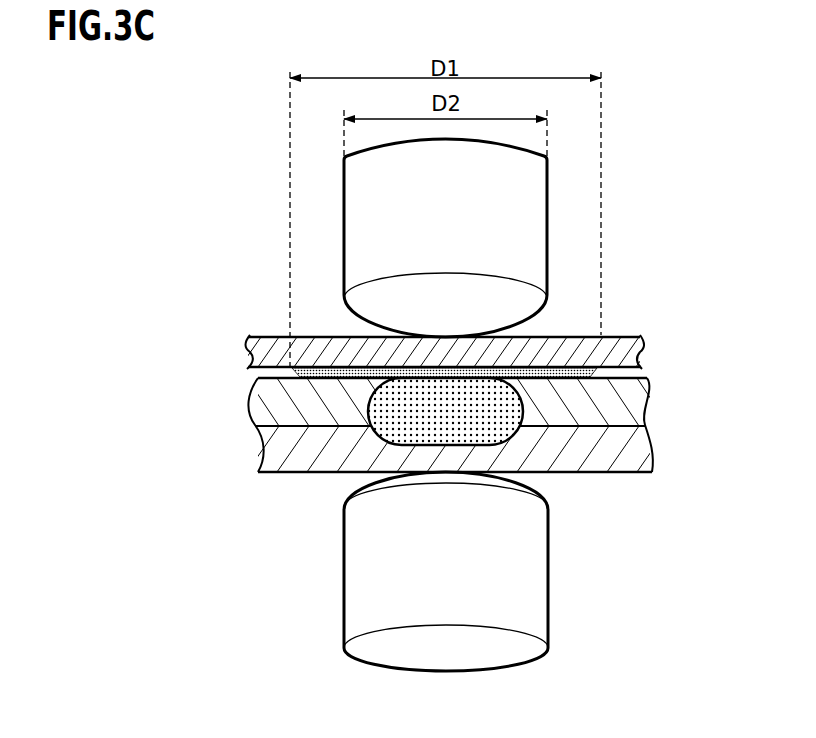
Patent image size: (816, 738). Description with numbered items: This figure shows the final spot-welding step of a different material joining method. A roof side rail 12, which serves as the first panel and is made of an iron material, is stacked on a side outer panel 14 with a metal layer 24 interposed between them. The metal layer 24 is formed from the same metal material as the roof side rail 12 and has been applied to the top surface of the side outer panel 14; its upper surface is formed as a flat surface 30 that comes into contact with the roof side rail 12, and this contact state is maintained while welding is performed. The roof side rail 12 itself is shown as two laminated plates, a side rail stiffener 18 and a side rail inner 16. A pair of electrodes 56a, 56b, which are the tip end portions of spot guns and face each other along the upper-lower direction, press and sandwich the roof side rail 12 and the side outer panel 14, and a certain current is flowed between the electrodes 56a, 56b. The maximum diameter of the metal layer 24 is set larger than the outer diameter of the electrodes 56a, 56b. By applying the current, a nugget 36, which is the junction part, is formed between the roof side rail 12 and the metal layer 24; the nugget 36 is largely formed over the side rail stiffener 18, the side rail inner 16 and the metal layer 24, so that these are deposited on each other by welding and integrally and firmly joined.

The roof side rail 12 is at (403, 425).
The side outer panel 14 is at (249, 352).
The side rail inner 16 is at (275, 454).
The side rail stiffener 18 is at (270, 410).
The metal layer 24 is at (597, 373).
The flat surface 30 is at (548, 384).
The nugget 36 is at (488, 418).
The electrode 56a is at (527, 230).
The electrode 56b is at (533, 568).